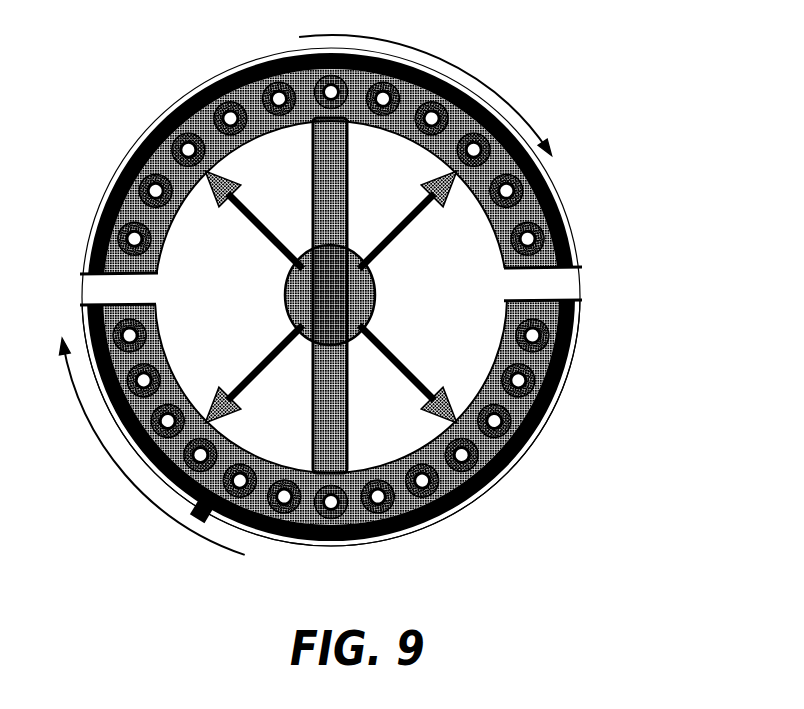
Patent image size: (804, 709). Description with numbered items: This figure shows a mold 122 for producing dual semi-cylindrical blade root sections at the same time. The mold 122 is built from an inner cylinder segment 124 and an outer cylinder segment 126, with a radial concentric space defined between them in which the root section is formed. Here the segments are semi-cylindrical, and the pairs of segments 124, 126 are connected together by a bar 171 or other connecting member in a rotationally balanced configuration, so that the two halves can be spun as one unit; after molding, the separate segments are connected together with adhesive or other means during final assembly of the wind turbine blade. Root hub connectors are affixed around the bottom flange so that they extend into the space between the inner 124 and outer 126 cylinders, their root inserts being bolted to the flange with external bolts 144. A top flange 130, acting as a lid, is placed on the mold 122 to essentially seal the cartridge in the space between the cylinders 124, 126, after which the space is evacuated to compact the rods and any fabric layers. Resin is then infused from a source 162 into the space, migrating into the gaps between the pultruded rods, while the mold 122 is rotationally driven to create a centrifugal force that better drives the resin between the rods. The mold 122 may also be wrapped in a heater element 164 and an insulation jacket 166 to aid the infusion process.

The mold 122 is at (592, 69).
The inner cylinder segment 124 is at (177, 378).
The outer cylinder segment 126 is at (148, 148).
The top flange 130 is at (132, 215).
The external bolts 144 is at (533, 230).
The resin source 162 is at (285, 300).
The heater element 164 is at (500, 473).
The insulation jacket 166 is at (573, 365).
The bar 171 is at (348, 152).